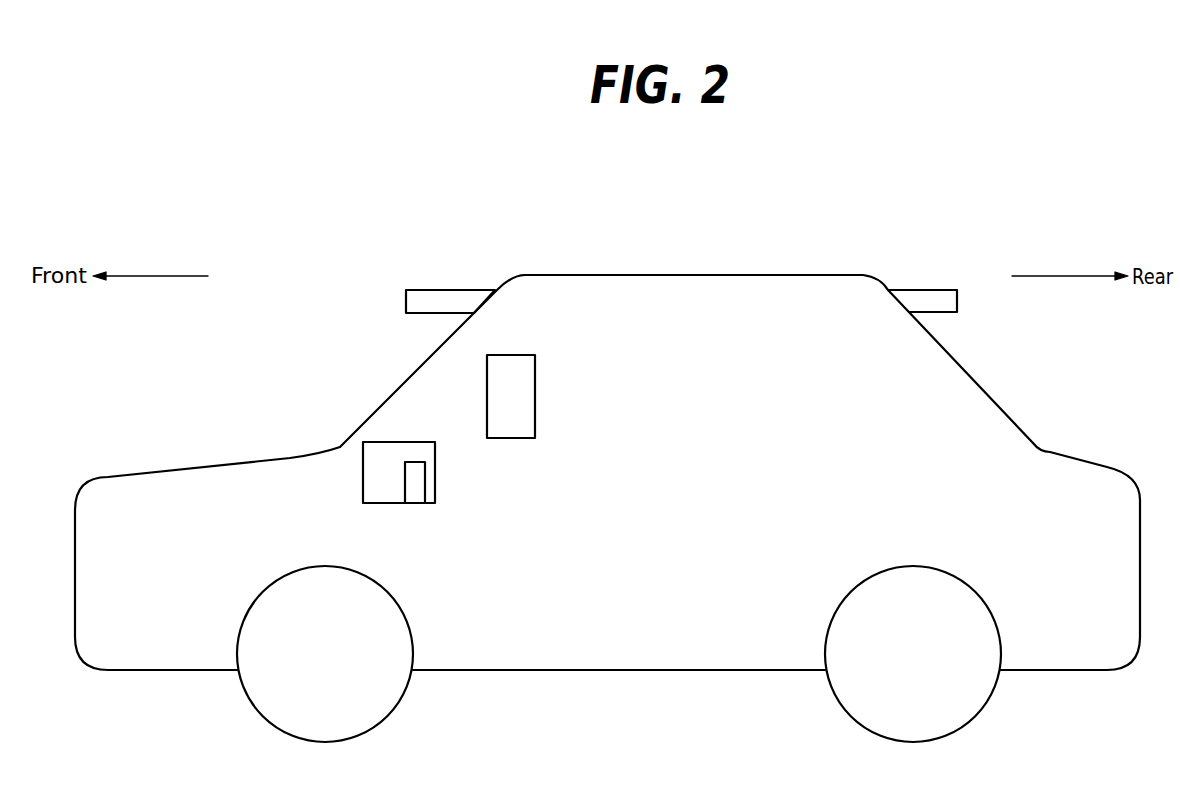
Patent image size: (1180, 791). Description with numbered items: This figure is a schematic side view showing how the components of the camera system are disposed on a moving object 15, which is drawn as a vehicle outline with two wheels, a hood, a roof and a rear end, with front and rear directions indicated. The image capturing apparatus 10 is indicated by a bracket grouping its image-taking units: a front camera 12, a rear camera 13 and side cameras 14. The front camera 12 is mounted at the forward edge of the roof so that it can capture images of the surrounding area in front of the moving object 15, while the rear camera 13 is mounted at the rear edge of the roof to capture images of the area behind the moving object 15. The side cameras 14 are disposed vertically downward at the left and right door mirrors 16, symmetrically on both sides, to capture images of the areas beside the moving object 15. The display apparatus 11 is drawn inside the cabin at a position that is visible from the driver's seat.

The image capturing apparatus 10 is at (487, 204).
The display apparatus 11 is at (525, 407).
The front camera 12 is at (428, 298).
The rear camera 13 is at (937, 302).
The side cameras 14 is at (415, 473).
The moving object 15 is at (215, 463).
The door mirrors 16 is at (362, 467).